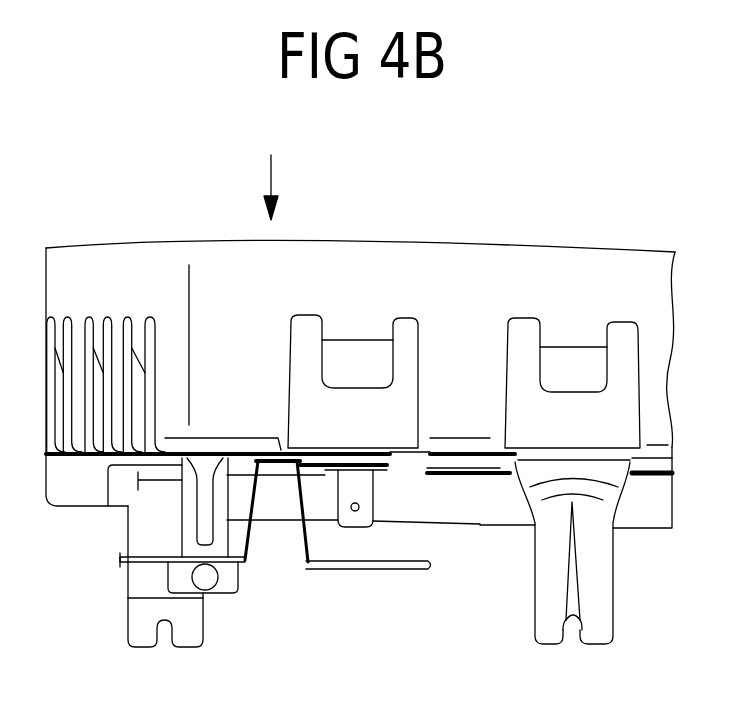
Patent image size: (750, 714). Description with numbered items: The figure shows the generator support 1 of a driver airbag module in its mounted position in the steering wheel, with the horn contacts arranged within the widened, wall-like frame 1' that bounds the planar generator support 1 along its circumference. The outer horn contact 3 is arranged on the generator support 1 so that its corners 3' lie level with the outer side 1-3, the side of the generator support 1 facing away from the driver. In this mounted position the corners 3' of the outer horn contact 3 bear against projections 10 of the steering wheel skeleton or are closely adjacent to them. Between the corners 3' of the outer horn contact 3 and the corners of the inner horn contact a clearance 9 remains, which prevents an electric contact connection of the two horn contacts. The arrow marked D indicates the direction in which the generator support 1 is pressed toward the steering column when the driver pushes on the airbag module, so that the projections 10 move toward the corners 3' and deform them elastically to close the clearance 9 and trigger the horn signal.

The generator support 1 is at (359, 423).
The frame 1' is at (360, 308).
The outer horn contact 3 is at (368, 562).
The corners of the outer horn contact 3' is at (166, 559).
The clearance 9 is at (403, 456).
The projections 10 is at (335, 565).
The side facing away from the driver 1-3 is at (647, 508).
The insertion direction D is at (267, 173).